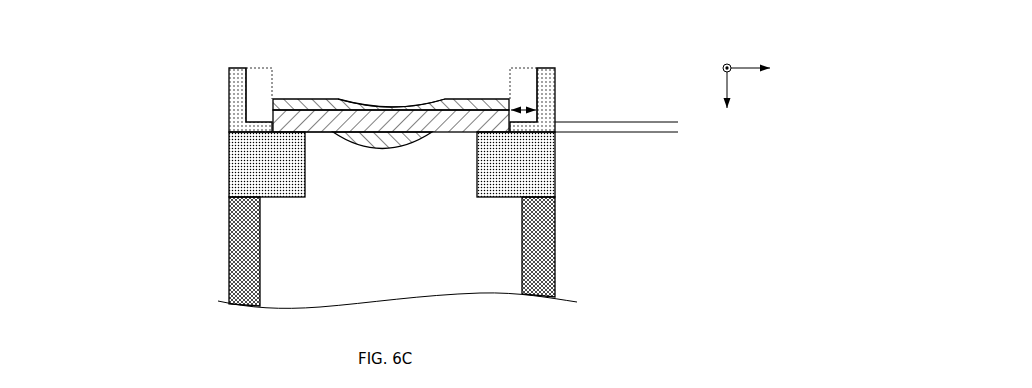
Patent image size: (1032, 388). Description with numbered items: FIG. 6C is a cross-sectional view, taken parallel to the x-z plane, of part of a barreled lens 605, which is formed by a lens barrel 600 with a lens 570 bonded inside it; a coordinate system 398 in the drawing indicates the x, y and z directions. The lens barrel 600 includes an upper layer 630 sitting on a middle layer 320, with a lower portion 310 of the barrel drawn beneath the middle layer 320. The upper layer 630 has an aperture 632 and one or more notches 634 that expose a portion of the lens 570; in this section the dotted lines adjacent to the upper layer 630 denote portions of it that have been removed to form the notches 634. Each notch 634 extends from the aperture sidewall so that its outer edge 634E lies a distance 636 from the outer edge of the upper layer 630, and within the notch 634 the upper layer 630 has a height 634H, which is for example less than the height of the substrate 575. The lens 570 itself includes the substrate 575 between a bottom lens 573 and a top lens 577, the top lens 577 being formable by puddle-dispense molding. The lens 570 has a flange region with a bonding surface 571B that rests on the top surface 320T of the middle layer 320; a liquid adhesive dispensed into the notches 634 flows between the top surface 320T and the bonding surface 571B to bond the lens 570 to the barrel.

The barreled lens 605 is at (110, 23).
The lens barrel 600 is at (172, 132).
The upper layer 630 is at (228, 88).
The notch 634 is at (270, 62).
The outer edge of notch 634E is at (248, 90).
The height of upper layer within notch 634H is at (654, 100).
The distance 636 is at (556, 110).
The aperture 632 is at (389, 70).
The lens 570 is at (380, 96).
The top lens 577 is at (420, 104).
The substrate 575 is at (405, 129).
The bonding surface 571B is at (320, 134).
The bottom lens 573 is at (386, 151).
The middle layer 320 is at (283, 188).
The top surface 320T is at (482, 128).
The substrate 310 is at (229, 270).
The coordinate system 398 is at (762, 136).